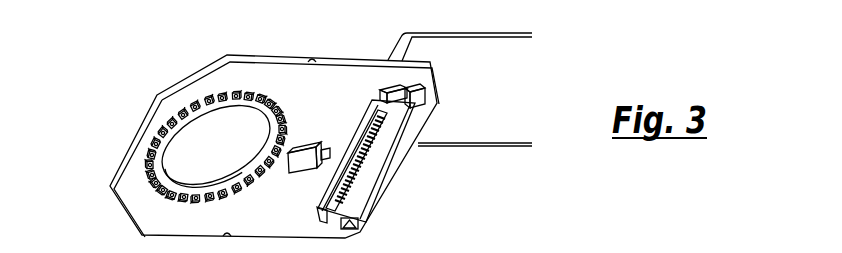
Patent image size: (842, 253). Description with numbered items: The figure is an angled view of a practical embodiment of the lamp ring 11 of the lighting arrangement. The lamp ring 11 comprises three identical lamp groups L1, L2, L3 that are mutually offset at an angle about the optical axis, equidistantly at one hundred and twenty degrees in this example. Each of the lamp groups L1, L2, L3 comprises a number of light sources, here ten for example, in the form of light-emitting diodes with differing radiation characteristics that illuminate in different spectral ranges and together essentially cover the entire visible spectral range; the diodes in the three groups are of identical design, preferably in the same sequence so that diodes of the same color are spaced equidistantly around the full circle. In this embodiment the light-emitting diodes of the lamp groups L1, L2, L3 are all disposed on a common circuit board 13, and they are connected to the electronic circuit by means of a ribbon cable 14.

The lamp ring 11 is at (126, 95).
The circuit board 13 is at (342, 80).
The ribbon cable 14 is at (478, 130).
The lamp group L1 is at (153, 152).
The lamp group L2 is at (268, 108).
The lamp group L3 is at (249, 183).